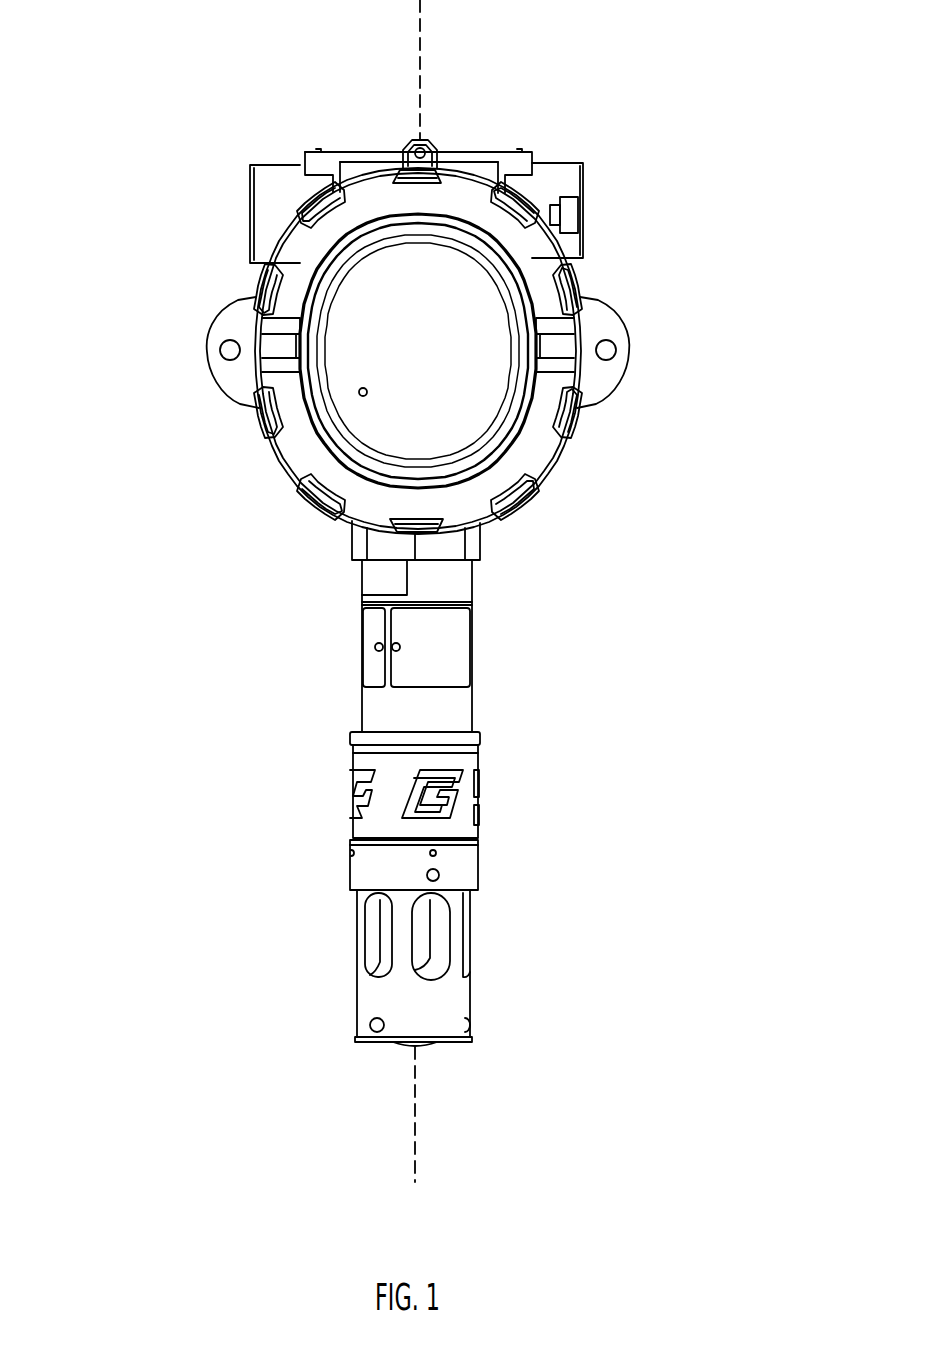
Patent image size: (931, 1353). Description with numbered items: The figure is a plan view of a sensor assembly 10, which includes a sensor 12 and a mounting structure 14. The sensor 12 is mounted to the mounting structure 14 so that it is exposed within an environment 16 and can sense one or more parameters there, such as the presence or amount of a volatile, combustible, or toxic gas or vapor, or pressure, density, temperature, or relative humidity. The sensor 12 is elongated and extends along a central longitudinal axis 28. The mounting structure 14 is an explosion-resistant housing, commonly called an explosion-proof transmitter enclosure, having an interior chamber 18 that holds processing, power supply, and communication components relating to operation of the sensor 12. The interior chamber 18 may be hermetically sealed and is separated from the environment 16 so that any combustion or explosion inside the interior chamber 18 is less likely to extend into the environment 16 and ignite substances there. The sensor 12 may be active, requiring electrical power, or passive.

The sensor assembly 10 is at (727, 212).
The sensor 12 is at (475, 712).
The mounting structure 14 is at (577, 277).
The environment 16 is at (96, 602).
The interior chamber 18 is at (358, 396).
The central longitudinal axis 28 is at (420, 34).